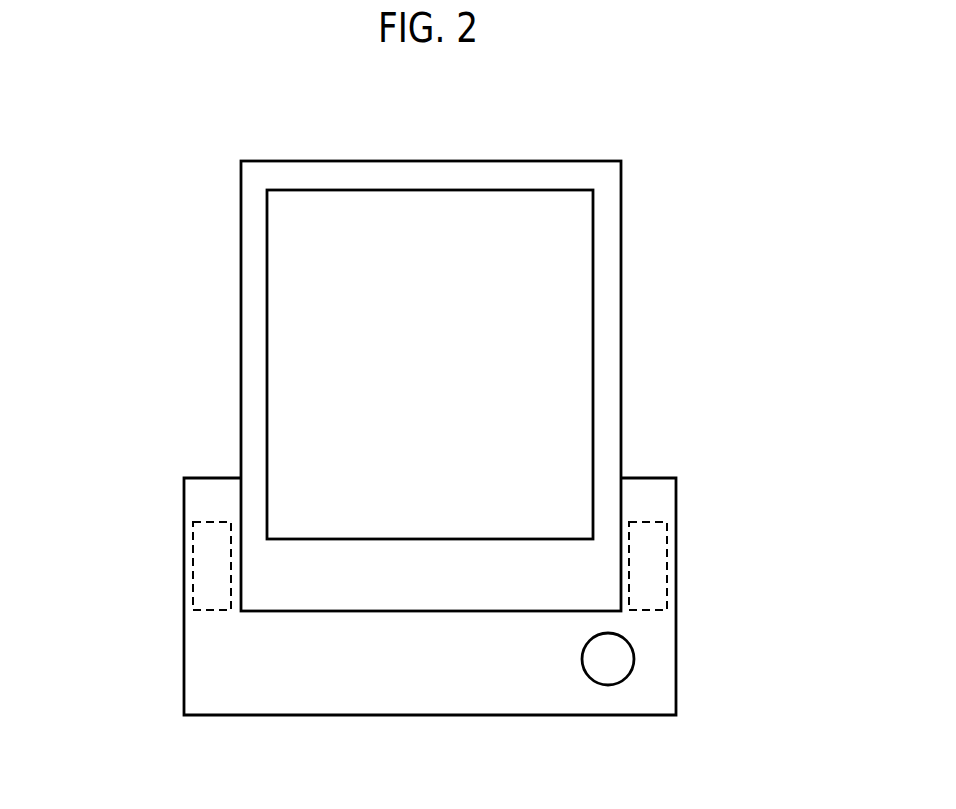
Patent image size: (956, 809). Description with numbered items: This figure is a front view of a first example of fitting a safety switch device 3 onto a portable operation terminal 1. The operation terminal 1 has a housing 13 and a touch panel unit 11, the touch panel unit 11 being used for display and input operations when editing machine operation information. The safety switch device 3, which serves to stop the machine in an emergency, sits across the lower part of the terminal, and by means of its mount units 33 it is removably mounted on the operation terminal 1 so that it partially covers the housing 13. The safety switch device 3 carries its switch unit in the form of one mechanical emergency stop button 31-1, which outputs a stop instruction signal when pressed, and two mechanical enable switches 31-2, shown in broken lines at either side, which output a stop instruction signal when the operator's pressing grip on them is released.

The operation terminal 1 is at (497, 367).
The touch panel unit 11 is at (593, 287).
The housing 13 is at (621, 362).
The safety switch device 3 is at (431, 592).
The emergency stop button 31-1 is at (632, 658).
The enable switch 31-2 is at (194, 550).
The mount units 33 is at (211, 478).